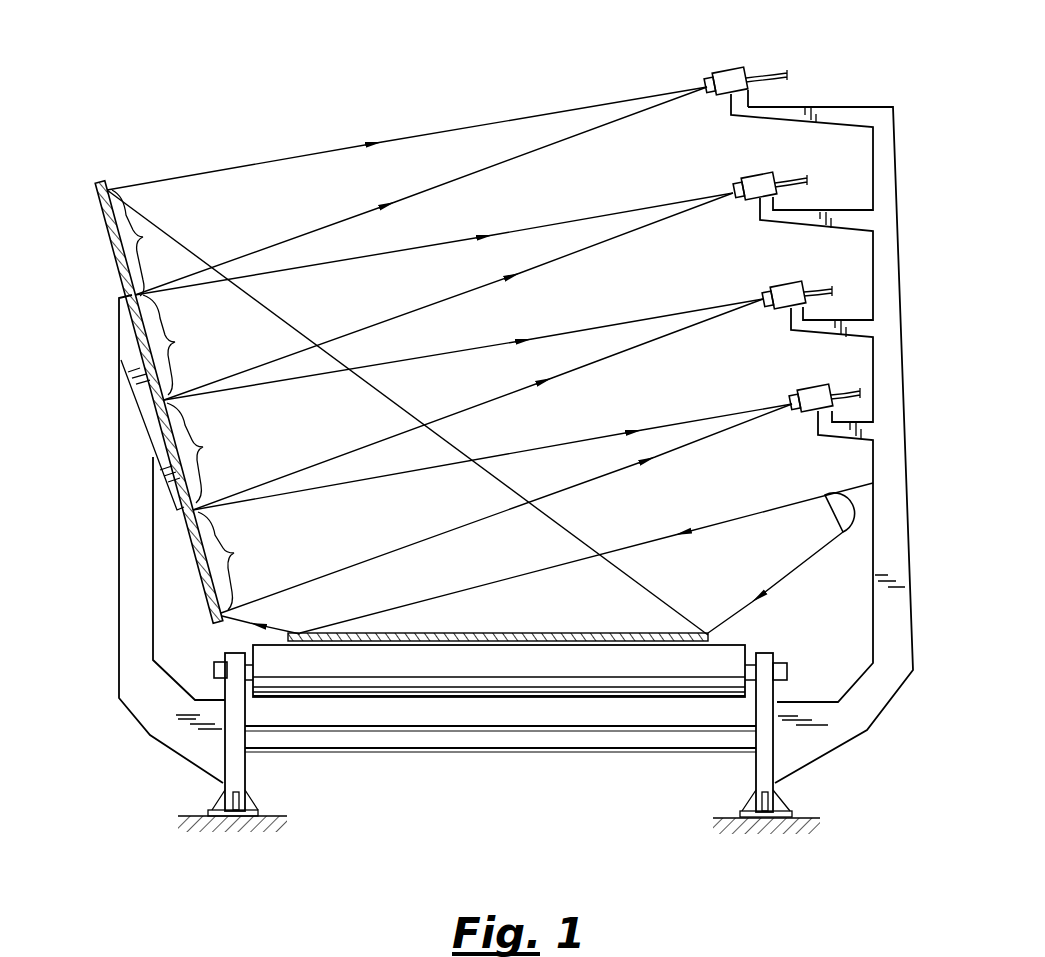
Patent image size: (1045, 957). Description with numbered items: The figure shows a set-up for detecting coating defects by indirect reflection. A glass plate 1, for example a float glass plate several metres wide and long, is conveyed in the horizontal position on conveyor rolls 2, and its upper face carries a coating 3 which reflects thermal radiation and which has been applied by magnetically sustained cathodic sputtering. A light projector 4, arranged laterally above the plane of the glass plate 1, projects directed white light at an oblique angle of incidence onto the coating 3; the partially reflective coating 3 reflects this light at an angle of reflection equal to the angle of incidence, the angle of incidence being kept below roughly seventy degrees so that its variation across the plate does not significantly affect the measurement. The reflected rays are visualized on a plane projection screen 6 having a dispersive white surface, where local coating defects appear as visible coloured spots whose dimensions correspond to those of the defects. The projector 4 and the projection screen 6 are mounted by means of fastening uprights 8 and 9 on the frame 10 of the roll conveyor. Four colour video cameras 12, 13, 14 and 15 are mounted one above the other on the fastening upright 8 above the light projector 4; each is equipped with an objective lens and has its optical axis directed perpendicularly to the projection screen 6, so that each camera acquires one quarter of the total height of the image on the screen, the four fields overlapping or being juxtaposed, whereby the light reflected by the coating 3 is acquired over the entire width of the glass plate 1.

The glass plate 1 is at (540, 637).
The conveyor rolls 2 is at (480, 683).
The coating 3 is at (597, 634).
The light projector 4 is at (840, 502).
The projection screen 6 is at (118, 226).
The fastening upright 8 is at (893, 525).
The fastening upright 9 is at (130, 507).
The frame 10 is at (302, 777).
The colour video camera 12 is at (812, 397).
The colour video camera 13 is at (785, 292).
The colour video camera 14 is at (757, 183).
The colour video camera 15 is at (728, 75).